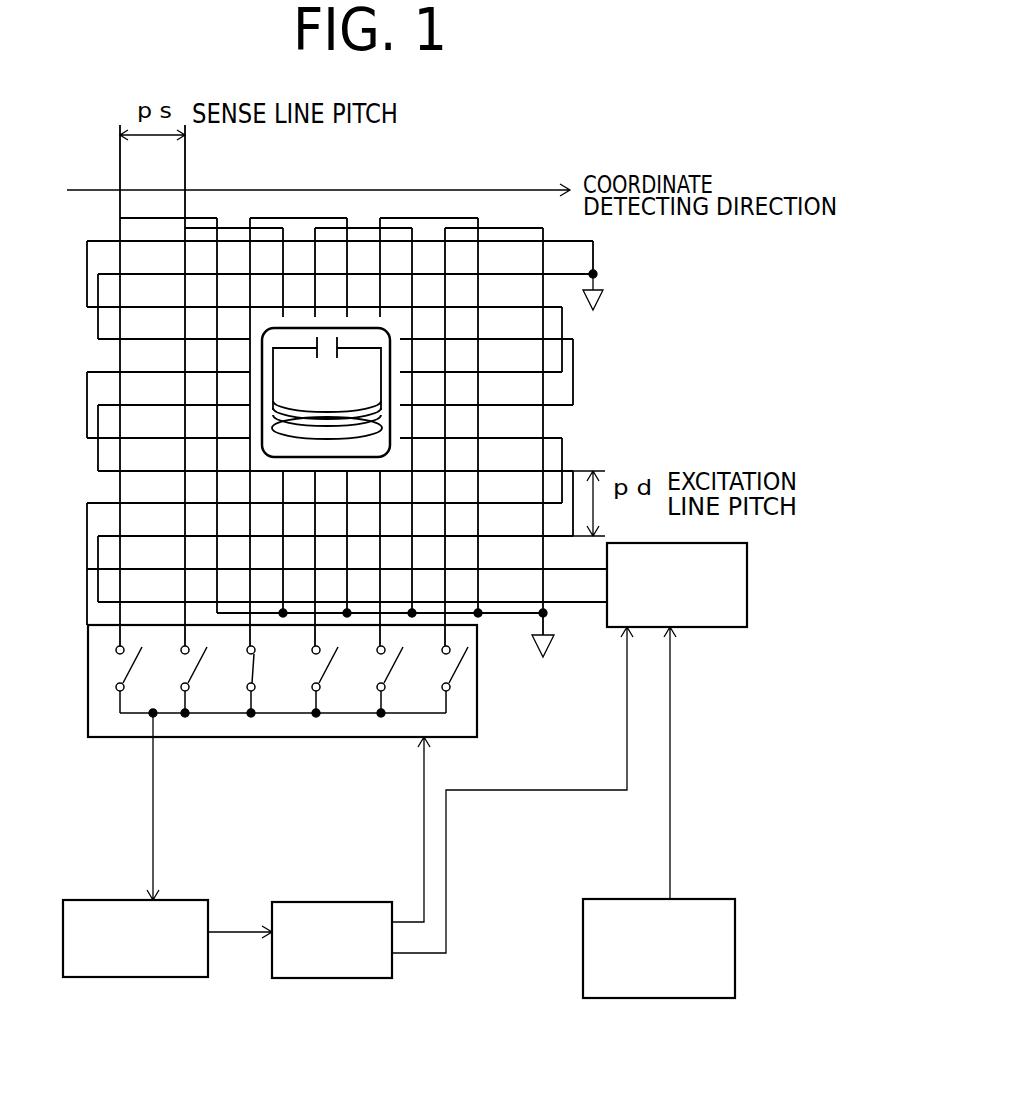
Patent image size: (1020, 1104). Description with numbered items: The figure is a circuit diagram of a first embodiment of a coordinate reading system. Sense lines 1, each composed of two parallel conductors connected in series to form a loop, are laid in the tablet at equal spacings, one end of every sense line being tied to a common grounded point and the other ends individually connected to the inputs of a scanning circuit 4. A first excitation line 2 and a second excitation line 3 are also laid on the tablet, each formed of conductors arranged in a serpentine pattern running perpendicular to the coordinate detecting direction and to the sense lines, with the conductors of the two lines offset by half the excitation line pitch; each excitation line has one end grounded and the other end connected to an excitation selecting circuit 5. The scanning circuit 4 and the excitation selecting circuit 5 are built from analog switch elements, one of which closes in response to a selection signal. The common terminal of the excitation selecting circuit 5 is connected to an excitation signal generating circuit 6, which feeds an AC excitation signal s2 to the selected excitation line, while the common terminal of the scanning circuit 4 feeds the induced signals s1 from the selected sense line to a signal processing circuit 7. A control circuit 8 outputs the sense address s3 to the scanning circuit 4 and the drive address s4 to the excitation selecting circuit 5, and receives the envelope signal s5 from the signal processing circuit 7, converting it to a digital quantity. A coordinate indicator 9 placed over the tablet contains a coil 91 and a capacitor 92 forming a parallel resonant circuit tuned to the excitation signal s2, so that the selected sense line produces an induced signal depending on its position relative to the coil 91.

The sense lines 1 is at (327, 347).
The first excitation line 2 is at (563, 326).
The second excitation line 3 is at (575, 372).
The scanning circuit 4 is at (175, 725).
The excitation selecting circuit 5 is at (723, 627).
The excitation signal generating circuit 6 is at (583, 918).
The signal processing circuit 7 is at (135, 968).
The control circuit 8 is at (332, 969).
The coordinate indicator 9 is at (449, 296).
The coil 91 is at (323, 427).
The capacitor 92 is at (434, 221).
The induced signals s1 is at (153, 823).
The excitation signal s2 is at (670, 862).
The sense address s3 is at (424, 905).
The drive address s4 is at (447, 945).
The envelope signal s5 is at (230, 932).